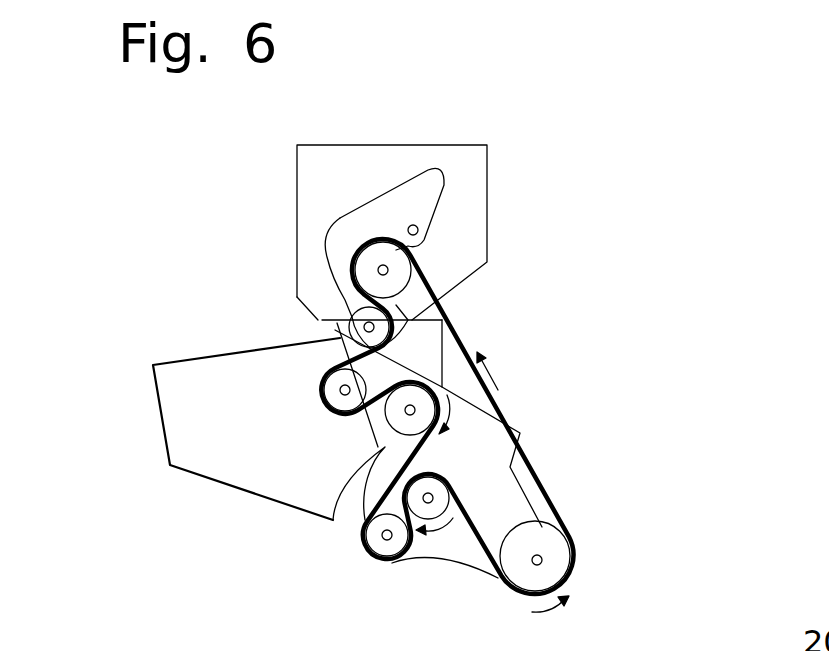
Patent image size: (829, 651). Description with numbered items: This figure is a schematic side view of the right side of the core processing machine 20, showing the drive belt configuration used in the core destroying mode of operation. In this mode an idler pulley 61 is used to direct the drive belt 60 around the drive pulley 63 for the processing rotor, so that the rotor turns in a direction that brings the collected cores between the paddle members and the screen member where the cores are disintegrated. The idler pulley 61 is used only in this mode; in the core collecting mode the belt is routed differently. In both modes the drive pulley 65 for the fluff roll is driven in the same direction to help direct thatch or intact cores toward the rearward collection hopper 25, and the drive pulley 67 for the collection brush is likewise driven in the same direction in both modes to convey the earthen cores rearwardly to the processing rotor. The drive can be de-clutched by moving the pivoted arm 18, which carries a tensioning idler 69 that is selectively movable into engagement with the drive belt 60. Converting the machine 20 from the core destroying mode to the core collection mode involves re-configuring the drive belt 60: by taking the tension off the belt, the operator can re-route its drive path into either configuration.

The pivoted arm 18 is at (342, 215).
The core processing machine 20 is at (543, 270).
The collection hopper 25 is at (155, 400).
The drive belt 60 is at (465, 343).
The idler pulley 61 is at (387, 540).
The drive pulley 63 is at (438, 513).
The drive pulley 65 is at (388, 443).
The drive pulley 67 is at (513, 527).
The tensioning idler 69 is at (352, 315).